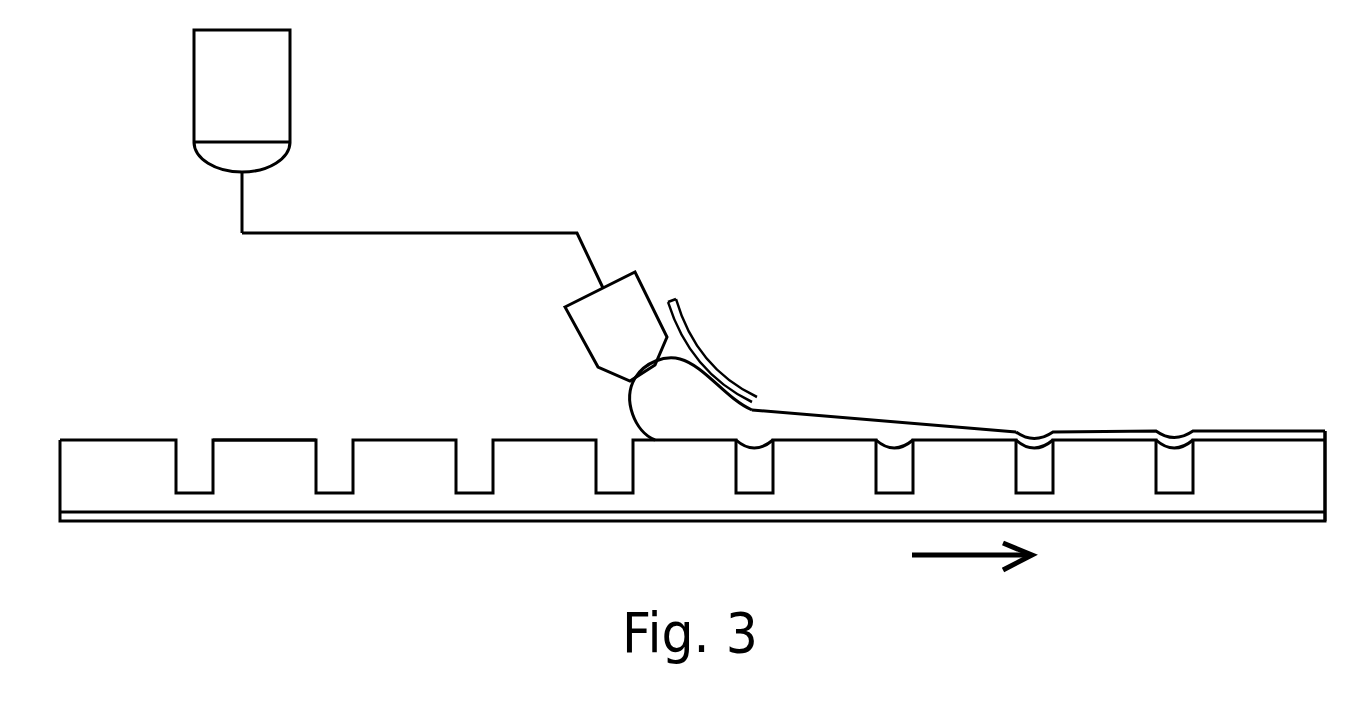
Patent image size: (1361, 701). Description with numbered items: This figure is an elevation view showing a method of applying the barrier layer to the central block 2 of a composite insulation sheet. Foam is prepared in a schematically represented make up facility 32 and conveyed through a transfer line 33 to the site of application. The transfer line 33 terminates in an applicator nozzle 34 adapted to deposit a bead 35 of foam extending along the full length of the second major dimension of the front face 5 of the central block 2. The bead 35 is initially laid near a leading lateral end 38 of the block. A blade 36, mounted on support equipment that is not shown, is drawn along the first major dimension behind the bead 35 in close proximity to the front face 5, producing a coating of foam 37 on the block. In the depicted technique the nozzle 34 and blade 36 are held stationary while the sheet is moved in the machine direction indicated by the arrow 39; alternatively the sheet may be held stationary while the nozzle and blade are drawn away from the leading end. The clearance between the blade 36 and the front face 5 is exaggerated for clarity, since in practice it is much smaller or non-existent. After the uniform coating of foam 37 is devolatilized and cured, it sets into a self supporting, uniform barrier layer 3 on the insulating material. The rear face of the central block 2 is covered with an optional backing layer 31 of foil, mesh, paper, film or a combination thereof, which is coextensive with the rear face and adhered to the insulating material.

The central block 2 is at (433, 482).
The barrier layer 3 is at (1235, 433).
The front face 5 is at (303, 441).
The backing layer 31 is at (105, 513).
The make up facility 32 is at (290, 115).
The transfer line 33 is at (298, 233).
The applicator nozzle 34 is at (647, 287).
The bead 35 is at (648, 405).
The blade 36 is at (707, 362).
The coating of foam 37 is at (863, 415).
The leading lateral end 38 is at (1327, 470).
The arrow 39 is at (937, 558).